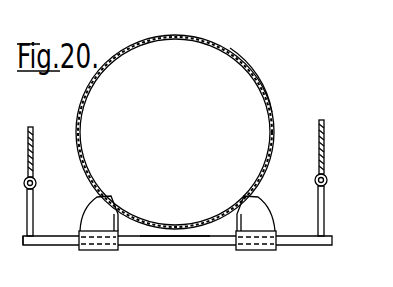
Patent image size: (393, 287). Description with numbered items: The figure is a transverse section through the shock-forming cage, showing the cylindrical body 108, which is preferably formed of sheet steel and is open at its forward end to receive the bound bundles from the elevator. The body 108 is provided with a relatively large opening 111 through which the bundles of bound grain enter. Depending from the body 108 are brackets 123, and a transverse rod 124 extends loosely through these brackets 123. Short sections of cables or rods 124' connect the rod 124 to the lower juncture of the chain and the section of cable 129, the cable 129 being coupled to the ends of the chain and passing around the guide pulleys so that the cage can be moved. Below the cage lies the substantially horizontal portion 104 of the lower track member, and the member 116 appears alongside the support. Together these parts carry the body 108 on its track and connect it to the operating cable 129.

The cage 108 is at (201, 41).
The opening 111 is at (263, 83).
The substantially horizontal portion 104 is at (166, 260).
The frame member 116 is at (16, 224).
The bracket 123 is at (108, 250).
The rod 124 is at (175, 257).
The cable or rod section 124' is at (197, 211).
The cable 129 is at (33, 151).